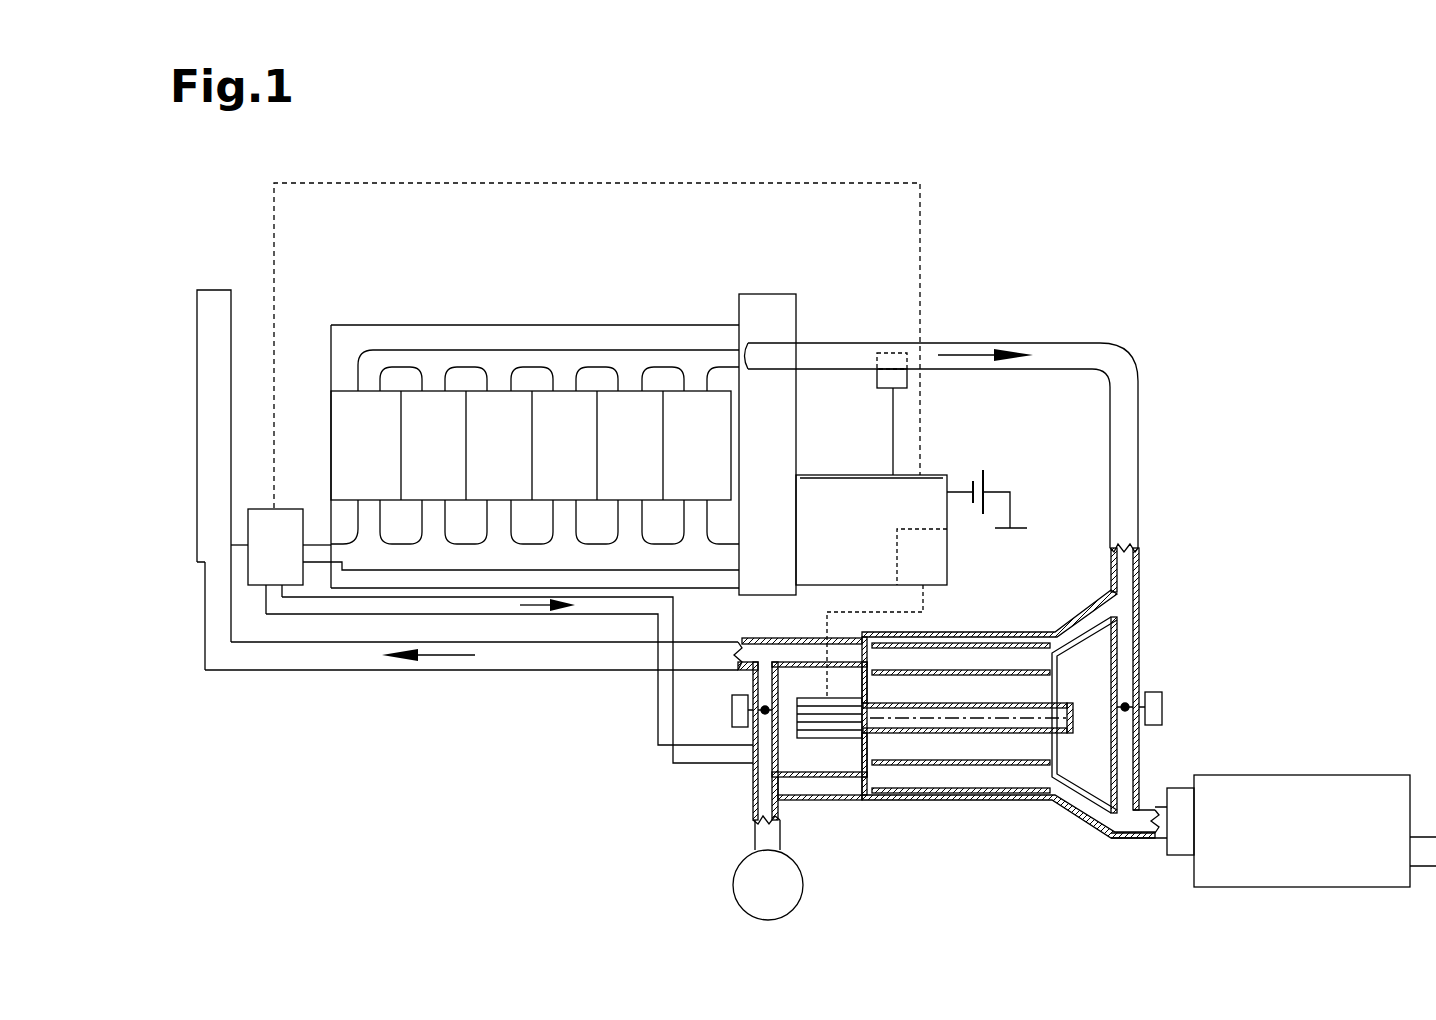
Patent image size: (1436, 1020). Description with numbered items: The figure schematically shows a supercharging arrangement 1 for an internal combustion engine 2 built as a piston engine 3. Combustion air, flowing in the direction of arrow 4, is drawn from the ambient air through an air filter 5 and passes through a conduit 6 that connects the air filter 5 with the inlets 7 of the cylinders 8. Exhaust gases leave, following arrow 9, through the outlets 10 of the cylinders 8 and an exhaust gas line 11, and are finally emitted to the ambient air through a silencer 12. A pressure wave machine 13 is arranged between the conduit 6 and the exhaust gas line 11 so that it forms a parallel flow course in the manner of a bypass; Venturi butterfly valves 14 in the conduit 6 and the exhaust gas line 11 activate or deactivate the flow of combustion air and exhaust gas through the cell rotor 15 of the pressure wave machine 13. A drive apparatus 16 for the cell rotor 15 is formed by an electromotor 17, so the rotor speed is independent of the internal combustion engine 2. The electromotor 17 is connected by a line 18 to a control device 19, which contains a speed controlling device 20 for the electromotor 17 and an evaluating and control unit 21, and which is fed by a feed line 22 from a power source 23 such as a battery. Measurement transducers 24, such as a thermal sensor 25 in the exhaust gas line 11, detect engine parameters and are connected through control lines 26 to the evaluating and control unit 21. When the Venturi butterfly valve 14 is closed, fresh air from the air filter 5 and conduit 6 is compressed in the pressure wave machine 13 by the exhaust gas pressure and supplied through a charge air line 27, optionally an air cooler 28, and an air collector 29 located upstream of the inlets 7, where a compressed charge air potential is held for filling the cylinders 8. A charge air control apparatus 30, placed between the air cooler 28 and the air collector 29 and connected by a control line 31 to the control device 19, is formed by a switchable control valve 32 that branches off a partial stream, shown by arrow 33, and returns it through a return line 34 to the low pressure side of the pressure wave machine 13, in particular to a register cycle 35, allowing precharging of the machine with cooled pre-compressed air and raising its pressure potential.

The supercharging arrangement 1 is at (1240, 533).
The internal combustion engine 2 is at (558, 296).
The piston engine 3 is at (383, 337).
The arrow 4 is at (458, 656).
The air filter 5 is at (757, 902).
The conduit 6 is at (608, 653).
The inlets 7 is at (375, 503).
The cylinders 8 is at (347, 418).
The arrow 9 is at (972, 355).
The outlets 10 is at (434, 390).
The exhaust gas line 11 is at (1088, 350).
The silencer 12 is at (1275, 795).
The pressure wave machine 13 is at (978, 818).
The Venturi butterfly valves 14 is at (742, 730).
The cell rotor 15 is at (950, 768).
The drive apparatus 16 is at (786, 733).
The electromotor 17 is at (826, 721).
The line 18 is at (836, 605).
The control device 19 is at (930, 485).
The speed controlling device 20 is at (925, 548).
The evaluating and control unit 21 is at (838, 523).
The feed line 22 is at (962, 487).
The power source 23 is at (1005, 481).
The measurement transducers 24 is at (895, 378).
The thermal sensor 25 is at (858, 332).
The control lines 26 is at (897, 450).
The charge air line 27 is at (215, 650).
The air cooler 28 is at (213, 297).
The air collector 29 is at (390, 565).
The charge air control apparatus 30 is at (261, 492).
The control line 31 is at (317, 188).
The control valve 32 is at (288, 527).
The arrow 33 is at (542, 607).
The return line 34 is at (666, 718).
The register cycle 35 is at (858, 768).